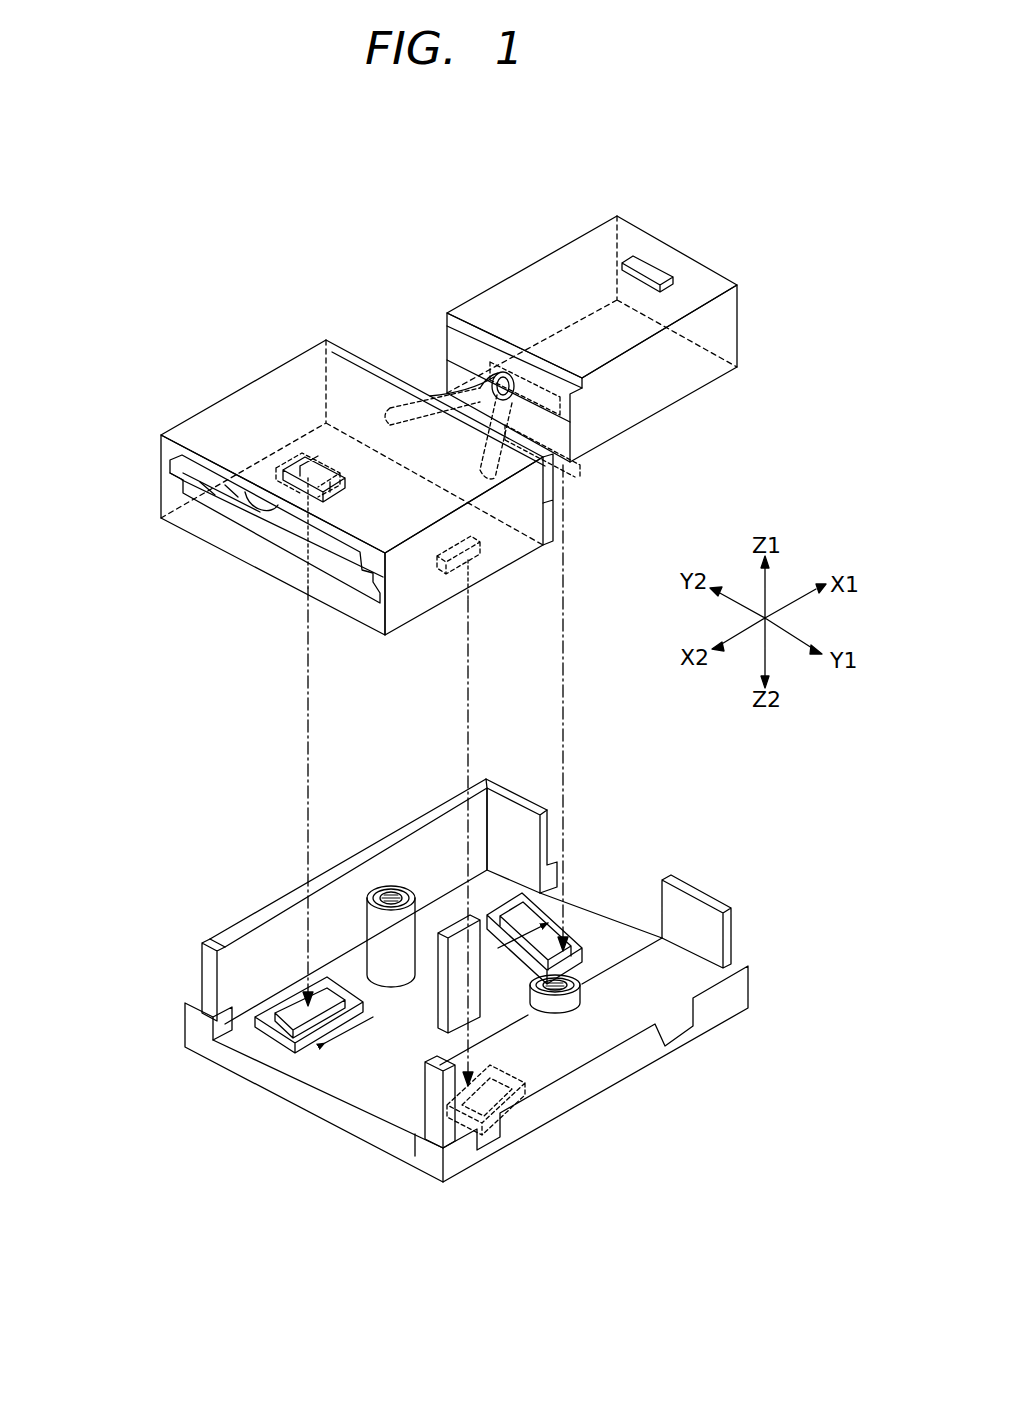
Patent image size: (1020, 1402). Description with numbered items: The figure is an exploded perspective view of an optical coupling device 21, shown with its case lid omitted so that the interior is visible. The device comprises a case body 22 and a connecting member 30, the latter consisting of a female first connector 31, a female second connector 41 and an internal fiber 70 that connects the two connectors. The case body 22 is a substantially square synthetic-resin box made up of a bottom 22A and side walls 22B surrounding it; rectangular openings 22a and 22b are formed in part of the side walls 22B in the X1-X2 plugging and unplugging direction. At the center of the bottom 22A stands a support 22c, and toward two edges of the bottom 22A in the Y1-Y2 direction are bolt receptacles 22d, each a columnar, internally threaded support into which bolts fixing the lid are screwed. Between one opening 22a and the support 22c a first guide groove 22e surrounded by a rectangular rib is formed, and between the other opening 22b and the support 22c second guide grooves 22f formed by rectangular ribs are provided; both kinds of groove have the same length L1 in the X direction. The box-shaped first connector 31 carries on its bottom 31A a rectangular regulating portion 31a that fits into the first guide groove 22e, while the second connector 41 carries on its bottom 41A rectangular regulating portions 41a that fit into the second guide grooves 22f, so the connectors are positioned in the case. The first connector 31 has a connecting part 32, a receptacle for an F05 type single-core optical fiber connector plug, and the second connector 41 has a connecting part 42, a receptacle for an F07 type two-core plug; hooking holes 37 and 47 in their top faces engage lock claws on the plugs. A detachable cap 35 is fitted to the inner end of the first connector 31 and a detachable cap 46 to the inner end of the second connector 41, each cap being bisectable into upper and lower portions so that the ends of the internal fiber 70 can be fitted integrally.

The optical coupling device 21 is at (96, 420).
The case body 22 is at (459, 961).
The bottom 22A is at (330, 1068).
The side walls 22B is at (515, 825).
The opening 22a is at (628, 880).
The opening 22b is at (360, 1090).
The support 22c is at (444, 985).
The bolt receptacle 22d is at (388, 887).
The first guide groove 22e is at (575, 945).
The second guide groove 22f is at (256, 1022).
The connecting member 30 is at (310, 163).
The first connector 31 is at (488, 278).
The bottom 31A is at (680, 372).
The regulating portion 31a is at (588, 452).
The connecting part 32 is at (688, 282).
The cap 35 is at (560, 405).
The hooking hole 37 is at (650, 262).
The second connector 41 is at (210, 392).
The bottom 41A is at (405, 595).
The regulating portion 41a is at (308, 432).
The connecting part 42 is at (236, 530).
The cap 46 is at (548, 528).
The hooking hole 47 is at (312, 486).
The internal fiber 70 is at (440, 388).